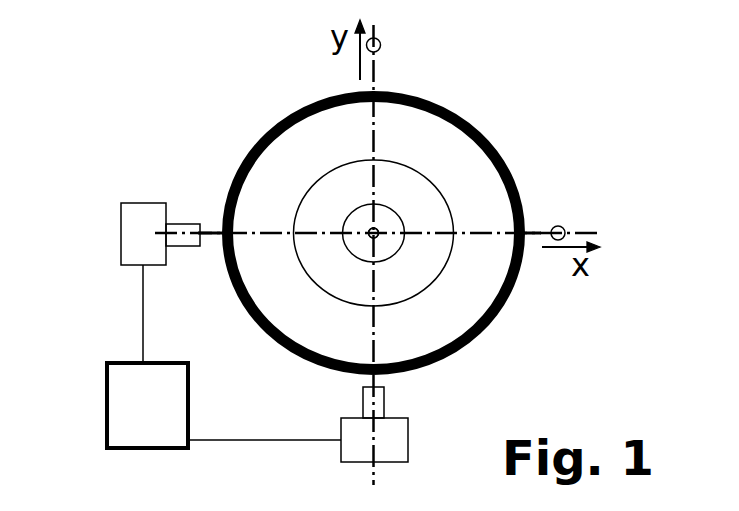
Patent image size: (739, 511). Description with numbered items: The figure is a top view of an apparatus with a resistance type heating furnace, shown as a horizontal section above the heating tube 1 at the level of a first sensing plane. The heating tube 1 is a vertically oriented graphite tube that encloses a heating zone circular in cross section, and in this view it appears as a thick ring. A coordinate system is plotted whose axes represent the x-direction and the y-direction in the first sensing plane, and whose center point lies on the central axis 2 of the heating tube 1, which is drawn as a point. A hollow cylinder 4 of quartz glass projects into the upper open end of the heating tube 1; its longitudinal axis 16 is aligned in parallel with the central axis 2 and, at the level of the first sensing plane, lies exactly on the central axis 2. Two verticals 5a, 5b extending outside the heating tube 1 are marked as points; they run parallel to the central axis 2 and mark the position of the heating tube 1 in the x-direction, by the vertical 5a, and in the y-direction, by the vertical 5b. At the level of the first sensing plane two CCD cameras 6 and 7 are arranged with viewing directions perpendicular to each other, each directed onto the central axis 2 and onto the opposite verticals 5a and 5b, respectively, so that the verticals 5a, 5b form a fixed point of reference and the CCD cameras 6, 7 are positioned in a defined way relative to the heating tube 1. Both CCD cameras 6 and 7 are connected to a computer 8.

The heating tube 1 is at (480, 128).
The central axis 2 is at (369, 229).
The longitudinal axis 16 is at (374, 233).
The hollow cylinder 4 is at (427, 262).
The vertical 5a is at (562, 228).
The vertical 5b is at (381, 42).
The CCD camera 6 is at (357, 446).
The CCD camera 7 is at (132, 227).
The computer 8 is at (120, 411).